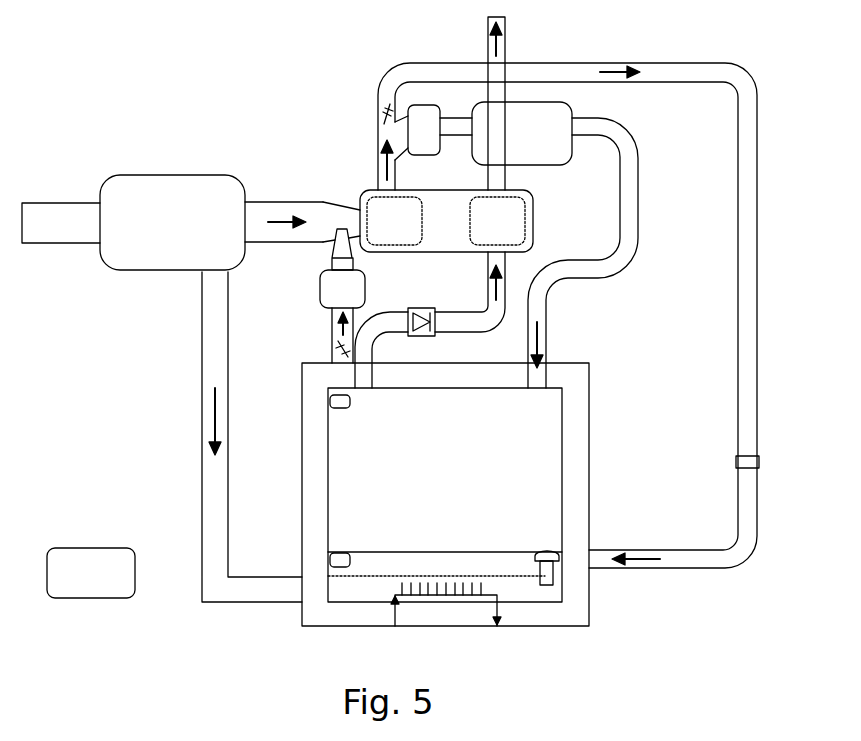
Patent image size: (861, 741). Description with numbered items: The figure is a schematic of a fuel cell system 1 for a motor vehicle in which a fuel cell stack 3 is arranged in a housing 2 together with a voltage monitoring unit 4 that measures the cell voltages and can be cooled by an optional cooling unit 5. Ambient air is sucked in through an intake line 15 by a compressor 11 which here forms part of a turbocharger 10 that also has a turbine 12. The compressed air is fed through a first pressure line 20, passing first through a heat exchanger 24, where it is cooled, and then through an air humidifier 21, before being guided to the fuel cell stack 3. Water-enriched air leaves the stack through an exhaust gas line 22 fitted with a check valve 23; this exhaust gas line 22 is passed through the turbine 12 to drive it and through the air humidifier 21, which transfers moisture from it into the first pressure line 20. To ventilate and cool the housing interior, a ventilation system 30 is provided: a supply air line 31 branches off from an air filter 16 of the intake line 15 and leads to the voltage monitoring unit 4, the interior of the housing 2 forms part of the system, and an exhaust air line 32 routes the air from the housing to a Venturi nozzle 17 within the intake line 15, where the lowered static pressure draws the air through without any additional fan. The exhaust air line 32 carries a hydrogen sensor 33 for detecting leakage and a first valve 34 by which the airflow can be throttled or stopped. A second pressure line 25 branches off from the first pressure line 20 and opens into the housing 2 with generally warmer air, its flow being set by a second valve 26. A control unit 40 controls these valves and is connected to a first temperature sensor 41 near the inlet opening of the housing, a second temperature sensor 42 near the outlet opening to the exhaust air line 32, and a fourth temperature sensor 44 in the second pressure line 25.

The fuel cell system 1 is at (778, 58).
The housing 2 is at (590, 488).
The fuel cell stack 3 is at (438, 480).
The voltage monitoring unit 4 is at (540, 602).
The cooling unit 5 is at (444, 612).
The turbocharger 10 is at (445, 189).
The compressor 11 is at (385, 232).
The turbine 12 is at (488, 232).
The intake line 15 is at (60, 202).
The air filter 16 is at (162, 232).
The Venturi nozzle 17 is at (346, 194).
The first pressure line 20 is at (549, 325).
The air humidifier 21 is at (512, 144).
The exhaust gas line 22 is at (506, 37).
The check valve 23 is at (423, 307).
The heat exchanger 24 is at (433, 132).
The second pressure line 25 is at (392, 66).
The second valve 26 is at (374, 113).
The ventilation system 30 is at (170, 344).
The supply air line 31 is at (200, 432).
The exhaust air line 32 is at (331, 320).
The hydrogen sensor 33 is at (333, 299).
The first valve 34 is at (328, 346).
The control unit 40 is at (80, 584).
The first temperature sensor 41 is at (333, 568).
The second temperature sensor 42 is at (329, 401).
The fourth temperature sensor 44 is at (760, 461).